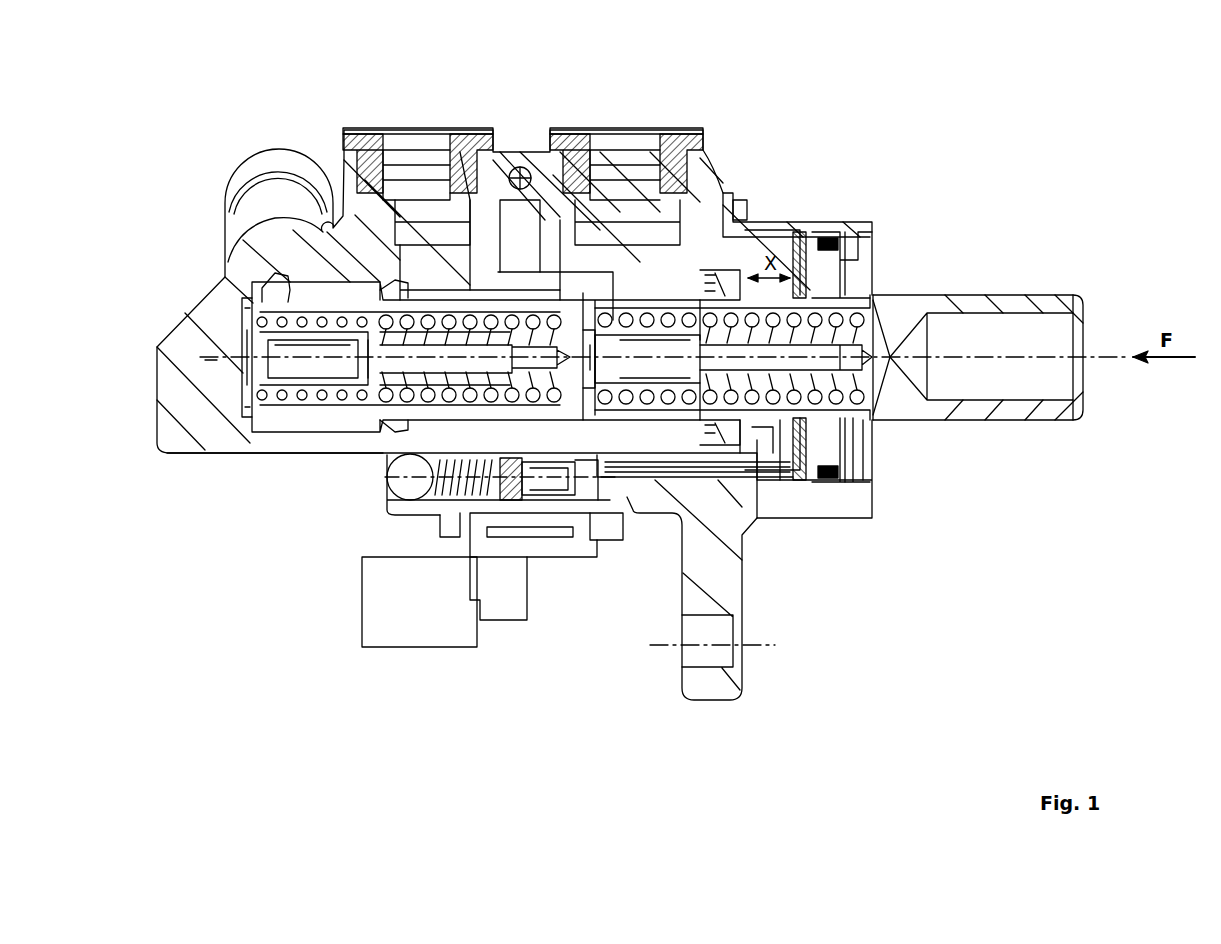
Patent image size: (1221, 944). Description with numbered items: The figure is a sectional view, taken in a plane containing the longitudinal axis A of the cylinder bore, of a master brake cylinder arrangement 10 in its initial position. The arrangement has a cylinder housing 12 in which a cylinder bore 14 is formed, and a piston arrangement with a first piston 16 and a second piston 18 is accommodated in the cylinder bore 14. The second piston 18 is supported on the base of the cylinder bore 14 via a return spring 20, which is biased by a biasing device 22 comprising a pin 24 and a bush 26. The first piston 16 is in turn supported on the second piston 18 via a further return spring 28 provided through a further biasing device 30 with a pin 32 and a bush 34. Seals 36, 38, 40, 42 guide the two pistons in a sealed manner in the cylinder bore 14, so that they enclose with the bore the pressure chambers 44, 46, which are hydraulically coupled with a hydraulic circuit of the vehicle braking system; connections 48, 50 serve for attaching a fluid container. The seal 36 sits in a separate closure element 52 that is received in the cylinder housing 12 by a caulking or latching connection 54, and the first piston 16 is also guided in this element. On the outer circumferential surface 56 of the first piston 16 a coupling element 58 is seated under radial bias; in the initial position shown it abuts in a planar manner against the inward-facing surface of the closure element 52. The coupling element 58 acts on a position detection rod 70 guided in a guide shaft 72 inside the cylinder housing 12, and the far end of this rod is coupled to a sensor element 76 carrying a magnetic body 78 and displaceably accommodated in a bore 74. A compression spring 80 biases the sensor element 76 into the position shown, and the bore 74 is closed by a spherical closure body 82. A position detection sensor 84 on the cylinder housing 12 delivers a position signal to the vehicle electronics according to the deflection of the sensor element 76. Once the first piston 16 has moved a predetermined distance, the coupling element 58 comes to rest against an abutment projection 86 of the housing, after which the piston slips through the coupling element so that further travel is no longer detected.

The master brake cylinder arrangement 10 is at (915, 123).
The cylinder housing 12 is at (183, 430).
The cylinder bore 14 is at (288, 425).
The first piston 16 is at (956, 295).
The second piston 18 is at (468, 170).
The return spring 20 is at (305, 310).
The biasing device 22 is at (337, 313).
The pin 24 is at (364, 425).
The bush 26 is at (250, 420).
The further return spring 28 is at (633, 405).
The further biasing device 30 is at (650, 320).
The pin 32 is at (846, 372).
The bush 34 is at (607, 330).
The seal 36 is at (827, 233).
The seal 38 is at (730, 280).
The seal 40 is at (435, 215).
The seal 42 is at (395, 175).
The pressure chamber 44 is at (523, 270).
The pressure chamber 46 is at (327, 400).
The connection 48 is at (588, 300).
The connection 50 is at (358, 128).
The closure element 52 is at (830, 482).
The caulking or latching connection 54 is at (858, 230).
The outer circumferential surface 56 is at (1000, 295).
The coupling element 58 is at (800, 482).
The position detection rod 70 is at (668, 482).
The guide shaft 72 is at (735, 478).
The bore 74 is at (460, 513).
The sensor element 76 is at (540, 490).
The magnetic body 78 is at (515, 500).
The compression spring 80 is at (440, 510).
The spherical closure body 82 is at (404, 484).
The position detection sensor 84 is at (596, 500).
The abutment projection 86 is at (772, 480).
The longitudinal axis A is at (212, 360).